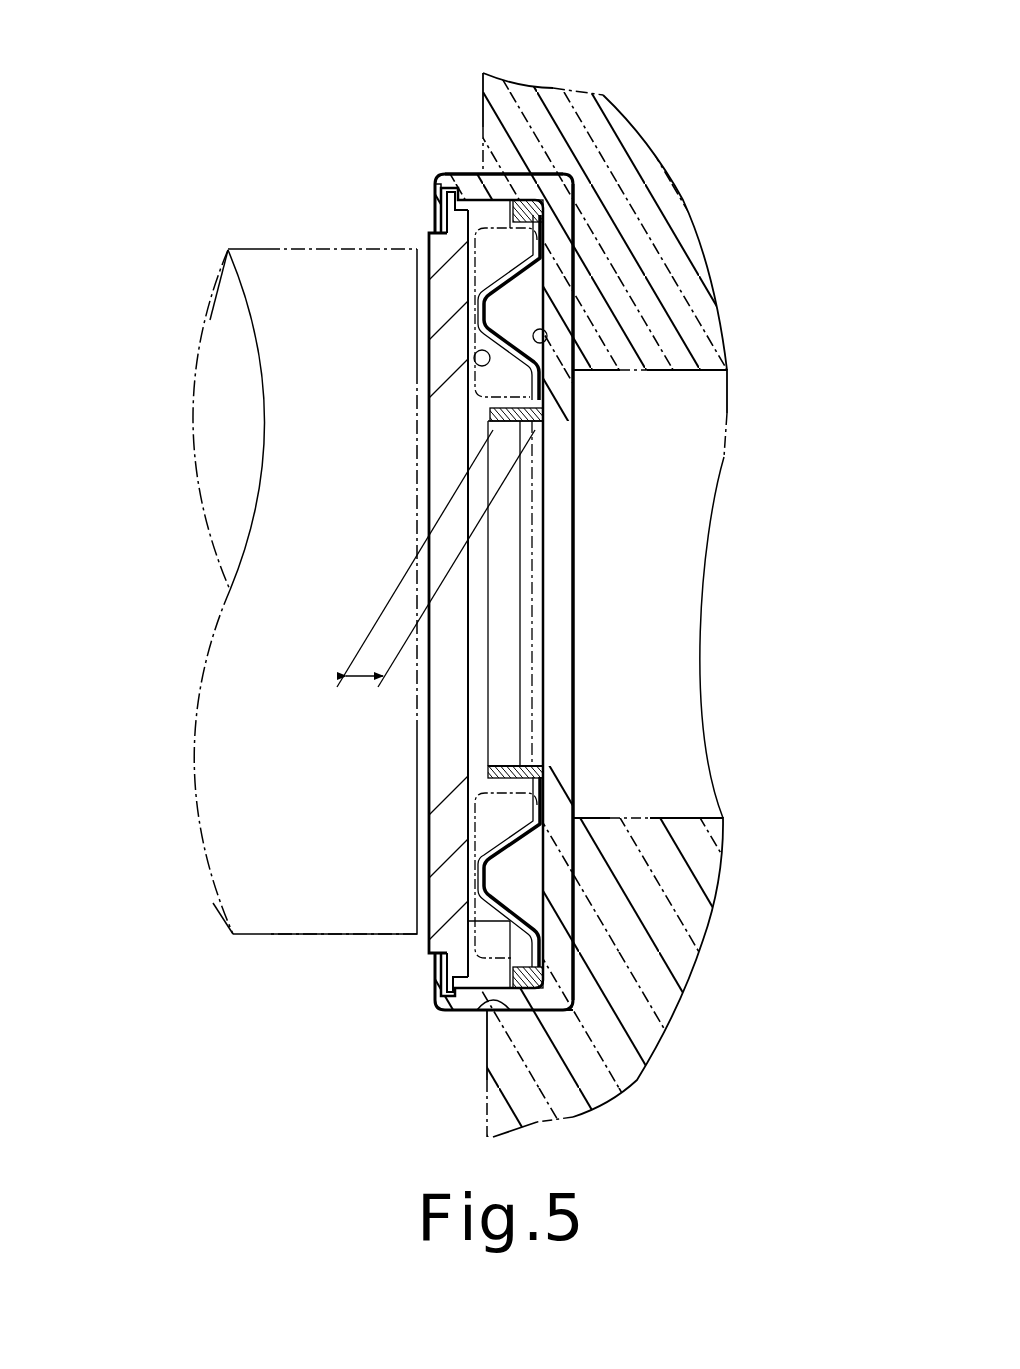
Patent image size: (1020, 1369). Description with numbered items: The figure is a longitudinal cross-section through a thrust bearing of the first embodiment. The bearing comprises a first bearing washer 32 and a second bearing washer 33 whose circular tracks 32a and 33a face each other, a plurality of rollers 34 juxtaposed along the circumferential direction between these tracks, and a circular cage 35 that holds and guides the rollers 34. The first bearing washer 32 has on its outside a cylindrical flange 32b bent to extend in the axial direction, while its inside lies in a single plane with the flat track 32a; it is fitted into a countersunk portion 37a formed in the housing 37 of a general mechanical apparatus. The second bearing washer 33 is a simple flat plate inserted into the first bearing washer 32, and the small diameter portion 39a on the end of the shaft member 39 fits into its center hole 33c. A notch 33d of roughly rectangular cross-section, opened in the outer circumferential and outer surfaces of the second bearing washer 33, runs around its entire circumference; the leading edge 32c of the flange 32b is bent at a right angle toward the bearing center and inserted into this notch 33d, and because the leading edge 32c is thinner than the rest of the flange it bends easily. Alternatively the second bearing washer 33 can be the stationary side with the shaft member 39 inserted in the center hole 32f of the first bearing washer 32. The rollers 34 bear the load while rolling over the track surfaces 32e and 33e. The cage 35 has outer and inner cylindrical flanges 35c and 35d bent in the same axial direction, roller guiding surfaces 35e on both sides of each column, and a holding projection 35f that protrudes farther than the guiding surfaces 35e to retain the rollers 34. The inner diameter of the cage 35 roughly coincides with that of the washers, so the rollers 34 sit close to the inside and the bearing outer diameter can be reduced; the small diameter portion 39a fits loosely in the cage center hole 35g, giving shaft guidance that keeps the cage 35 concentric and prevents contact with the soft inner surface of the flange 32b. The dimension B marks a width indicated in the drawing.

The first bearing washer 32 is at (547, 505).
The track 32a is at (593, 293).
The cylindrical flange 32b is at (516, 168).
The leading edge 32c is at (437, 193).
The track surface 32e is at (549, 337).
The center hole 32f is at (562, 424).
The second bearing washer 33 is at (416, 263).
The track 33a is at (450, 303).
The center hole 33c is at (440, 440).
The notch 33d is at (443, 230).
The track surface 33e is at (474, 359).
The rollers 34 is at (550, 300).
The cage 35 is at (528, 909).
The cylindrical flange 35c is at (547, 1018).
The cylindrical flange 35d is at (503, 763).
The roller guiding surfaces 35e is at (510, 837).
The holding projection 35f is at (490, 873).
The center hole 35g is at (500, 762).
The housing 37 is at (567, 1096).
The countersunk portion 37a is at (470, 1017).
The shaft member 39 is at (353, 597).
The small diameter portion 39a is at (508, 655).
The width dimension B is at (436, 577).